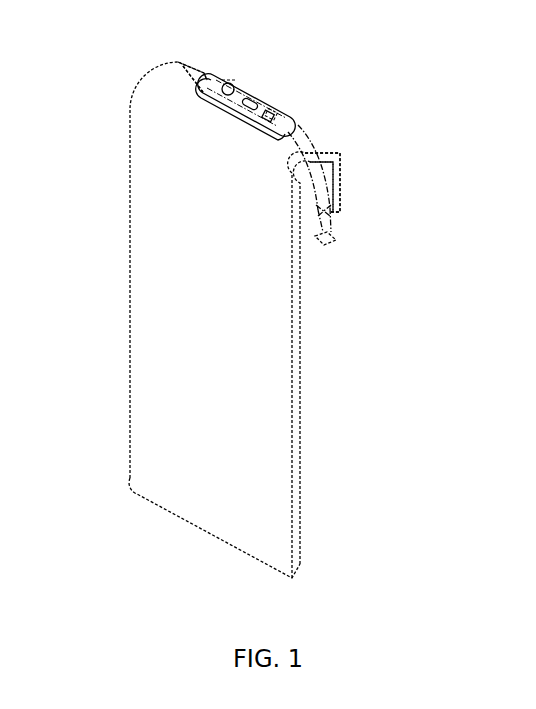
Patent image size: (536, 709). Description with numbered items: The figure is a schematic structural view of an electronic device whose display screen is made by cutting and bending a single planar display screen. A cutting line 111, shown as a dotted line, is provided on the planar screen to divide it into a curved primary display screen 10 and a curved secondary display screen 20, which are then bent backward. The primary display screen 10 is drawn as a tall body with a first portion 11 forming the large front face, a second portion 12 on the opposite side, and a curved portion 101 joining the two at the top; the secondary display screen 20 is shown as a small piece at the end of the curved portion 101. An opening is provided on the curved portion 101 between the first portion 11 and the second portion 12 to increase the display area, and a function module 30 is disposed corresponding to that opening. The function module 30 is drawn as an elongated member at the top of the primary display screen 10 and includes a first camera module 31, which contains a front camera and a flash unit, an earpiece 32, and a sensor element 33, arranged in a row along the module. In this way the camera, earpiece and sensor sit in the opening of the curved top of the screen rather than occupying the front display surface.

The primary display screen 10 is at (128, 183).
The first portion 11 is at (162, 400).
The cutting line 111 is at (197, 90).
The second portion 12 is at (338, 188).
The function module 30 is at (252, 94).
The first camera module 31 is at (227, 83).
The earpiece 32 is at (251, 98).
The sensor element 33 is at (273, 110).
The curved portion 101 is at (308, 146).
The secondary display screen 20 is at (328, 227).